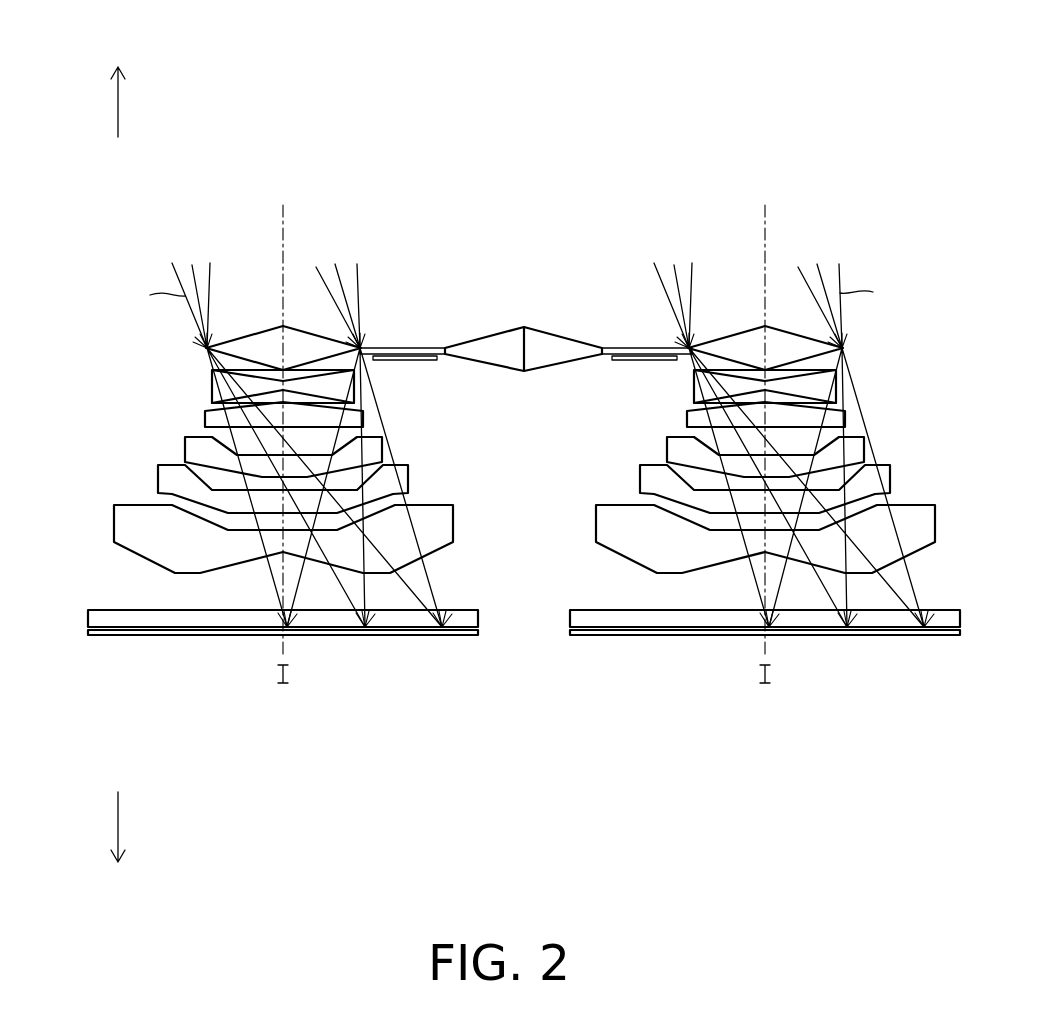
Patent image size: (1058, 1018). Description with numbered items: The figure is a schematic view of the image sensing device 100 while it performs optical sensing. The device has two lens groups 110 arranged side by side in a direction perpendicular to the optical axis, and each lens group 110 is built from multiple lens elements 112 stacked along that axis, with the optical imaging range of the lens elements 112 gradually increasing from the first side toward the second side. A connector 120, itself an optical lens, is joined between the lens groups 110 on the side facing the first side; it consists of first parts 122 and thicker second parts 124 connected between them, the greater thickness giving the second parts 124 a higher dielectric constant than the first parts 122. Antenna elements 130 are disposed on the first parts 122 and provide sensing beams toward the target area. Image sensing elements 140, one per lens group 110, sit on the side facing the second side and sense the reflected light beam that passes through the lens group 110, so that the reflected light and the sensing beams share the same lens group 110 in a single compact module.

The image sensing device 100 is at (501, 431).
The lens group 110 is at (117, 209).
The lens element 112 is at (128, 513).
The connector 120 is at (801, 3).
The first part 122 is at (415, 347).
The second part 124 is at (258, 336).
The antenna element 130 is at (428, 361).
The image sensing element 140 is at (190, 636).